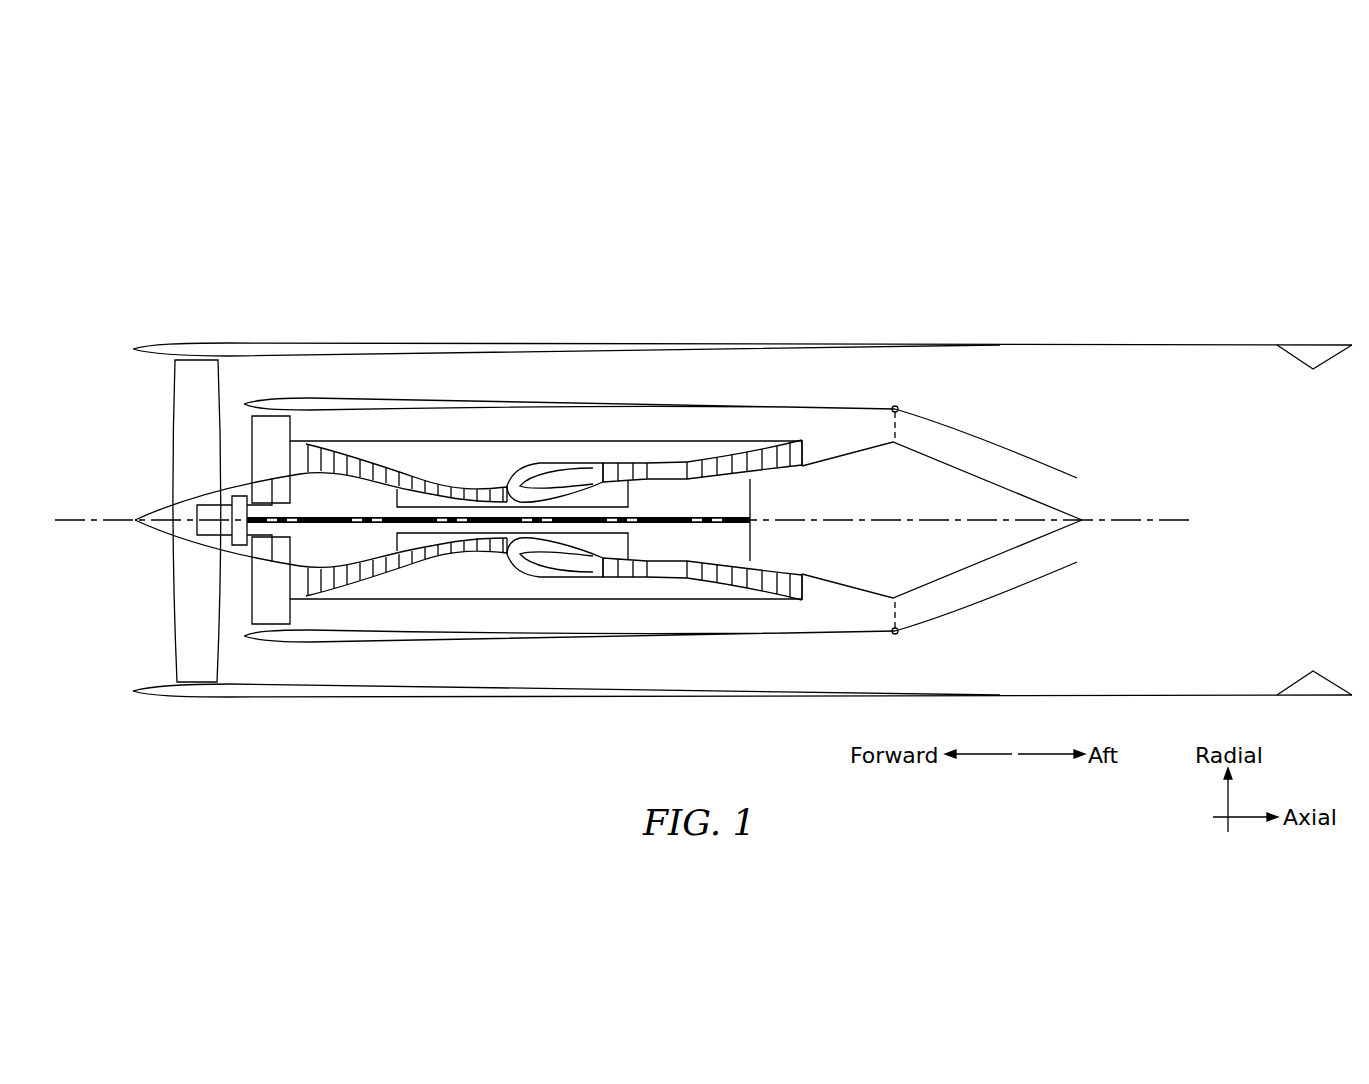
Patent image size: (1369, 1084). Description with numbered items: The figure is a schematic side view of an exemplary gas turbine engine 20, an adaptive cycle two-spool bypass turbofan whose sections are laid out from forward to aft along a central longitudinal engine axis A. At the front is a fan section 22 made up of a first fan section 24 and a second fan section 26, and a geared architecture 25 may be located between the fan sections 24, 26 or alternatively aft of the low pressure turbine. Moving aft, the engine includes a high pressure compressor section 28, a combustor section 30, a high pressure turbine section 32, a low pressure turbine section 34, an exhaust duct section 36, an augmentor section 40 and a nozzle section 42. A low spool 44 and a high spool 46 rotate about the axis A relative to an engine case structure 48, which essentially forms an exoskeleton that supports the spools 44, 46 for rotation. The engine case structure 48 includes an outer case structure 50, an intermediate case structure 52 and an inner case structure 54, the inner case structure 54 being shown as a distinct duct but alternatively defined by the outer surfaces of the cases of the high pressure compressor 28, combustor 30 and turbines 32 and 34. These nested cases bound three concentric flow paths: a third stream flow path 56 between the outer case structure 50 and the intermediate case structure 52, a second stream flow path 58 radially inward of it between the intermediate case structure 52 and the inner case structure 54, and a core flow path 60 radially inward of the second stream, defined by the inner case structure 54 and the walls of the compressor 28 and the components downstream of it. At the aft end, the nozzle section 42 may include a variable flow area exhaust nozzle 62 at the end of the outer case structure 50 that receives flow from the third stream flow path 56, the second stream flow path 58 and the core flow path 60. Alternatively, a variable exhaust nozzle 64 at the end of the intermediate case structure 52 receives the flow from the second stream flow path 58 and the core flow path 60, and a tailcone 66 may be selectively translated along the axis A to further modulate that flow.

The gas turbine engine 20 is at (810, 205).
The fan section 22 is at (163, 208).
The first fan section 24 is at (228, 282).
The geared architecture 25 is at (240, 514).
The second fan section 26 is at (297, 282).
The high pressure compressor section 28 is at (525, 282).
The combustor section 30 is at (620, 282).
The high pressure turbine section 32 is at (660, 282).
The low pressure turbine section 34 is at (805, 282).
The exhaust duct section 36 is at (1018, 282).
The augmentor section 40 is at (1197, 282).
The nozzle section 42 is at (1197, 282).
The low spool 44 is at (682, 519).
The high spool 46 is at (427, 535).
The engine case structure 48 is at (368, 712).
The outer case structure 50 is at (430, 697).
The intermediate case structure 52 is at (517, 638).
The inner case structure 54 is at (588, 598).
The third stream flow path 56 is at (497, 387).
The second stream flow path 58 is at (447, 434).
The core flow path 60 is at (473, 492).
The variable flow area exhaust nozzle 62 is at (1302, 363).
The variable exhaust nozzle 64 is at (1020, 447).
The tailcone 66 is at (963, 563).
The central longitudinal engine axis A is at (85, 520).